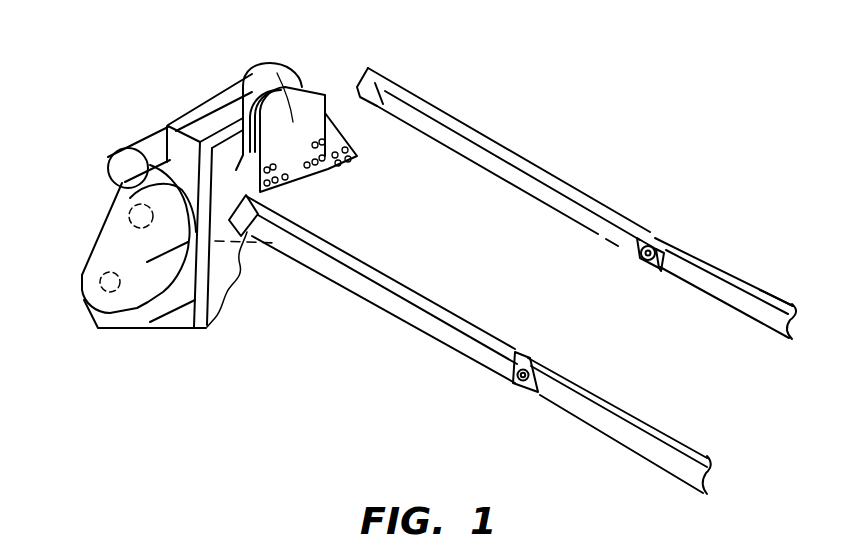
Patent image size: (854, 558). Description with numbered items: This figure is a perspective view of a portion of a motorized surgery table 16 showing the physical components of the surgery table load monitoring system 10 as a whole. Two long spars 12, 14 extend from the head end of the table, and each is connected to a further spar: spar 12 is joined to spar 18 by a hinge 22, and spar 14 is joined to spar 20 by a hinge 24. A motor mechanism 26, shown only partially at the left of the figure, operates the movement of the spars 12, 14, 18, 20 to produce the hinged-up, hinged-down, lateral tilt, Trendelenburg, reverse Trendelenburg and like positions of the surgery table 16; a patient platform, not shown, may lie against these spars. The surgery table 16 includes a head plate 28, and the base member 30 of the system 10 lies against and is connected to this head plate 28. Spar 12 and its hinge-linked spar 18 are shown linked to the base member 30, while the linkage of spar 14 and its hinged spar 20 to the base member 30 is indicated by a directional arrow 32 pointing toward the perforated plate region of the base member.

The surgery table load monitoring system 10 is at (340, 94).
The spar 12 is at (405, 306).
The spar 14 is at (595, 231).
The surgery table 16 is at (717, 252).
The spar 18 is at (645, 448).
The spar 20 is at (765, 313).
The hinge 22 is at (522, 386).
The hinge 24 is at (648, 262).
The motor mechanism 26 is at (84, 197).
The head plate 28 is at (249, 79).
The base member 30 is at (181, 119).
The directional arrow 32 is at (362, 177).